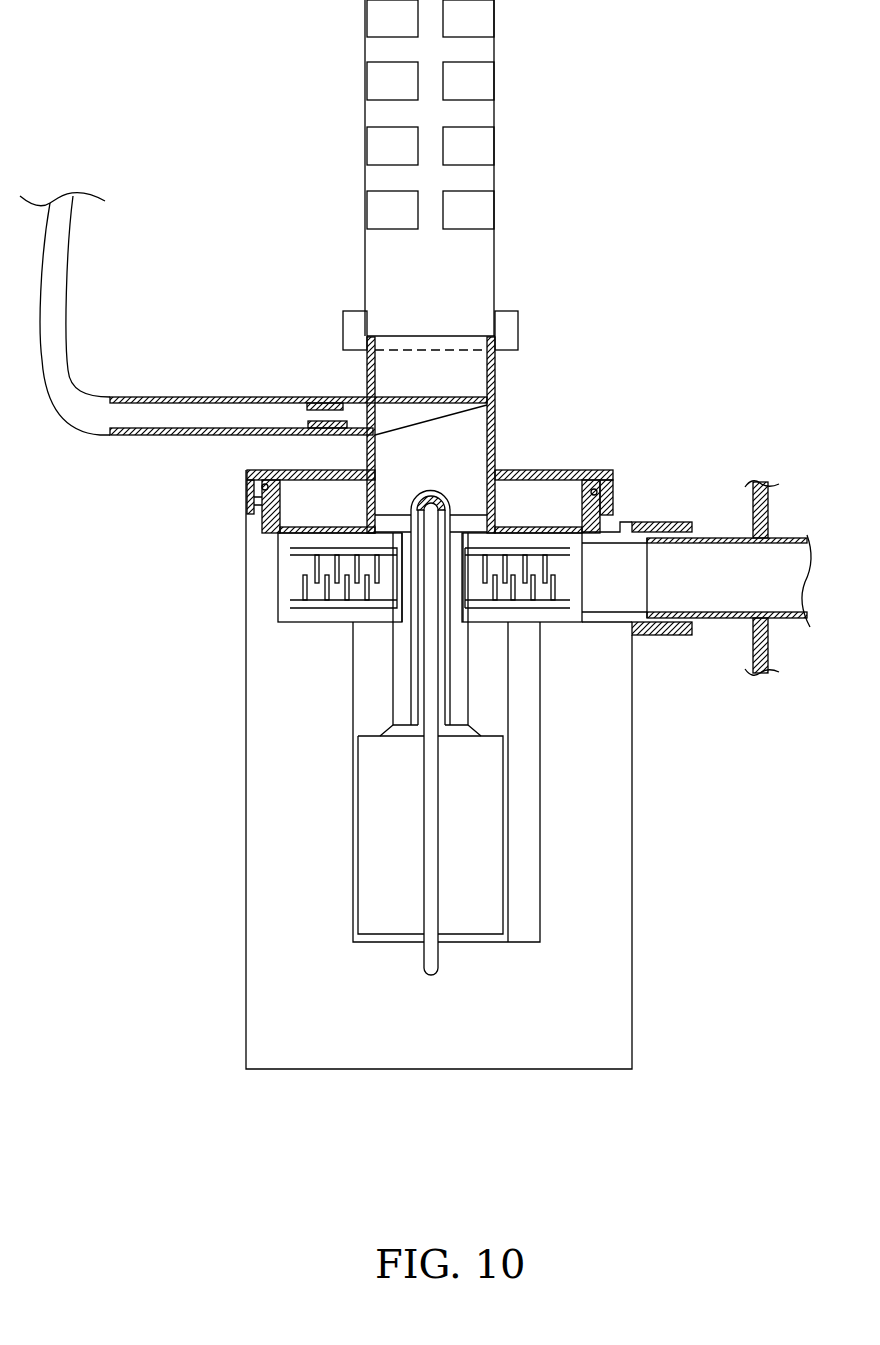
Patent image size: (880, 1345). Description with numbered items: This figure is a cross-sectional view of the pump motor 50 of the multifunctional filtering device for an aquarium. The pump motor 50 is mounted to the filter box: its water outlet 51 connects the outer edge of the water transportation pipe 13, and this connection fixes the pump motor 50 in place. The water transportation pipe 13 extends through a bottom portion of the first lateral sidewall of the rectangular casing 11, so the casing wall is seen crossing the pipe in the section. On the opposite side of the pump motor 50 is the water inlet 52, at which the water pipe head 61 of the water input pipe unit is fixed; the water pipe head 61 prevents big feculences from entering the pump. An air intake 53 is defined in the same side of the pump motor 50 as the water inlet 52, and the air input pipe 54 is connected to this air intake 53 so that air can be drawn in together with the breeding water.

The rectangular casing 11 is at (762, 660).
The water transportation pipe 13 is at (793, 548).
The pump motor 50 is at (613, 1043).
The water outlet 51 is at (620, 547).
The water inlet 52 is at (477, 370).
The air intake 53 is at (352, 420).
The air input pipe 54 is at (60, 255).
The water pipe head 61 is at (484, 268).